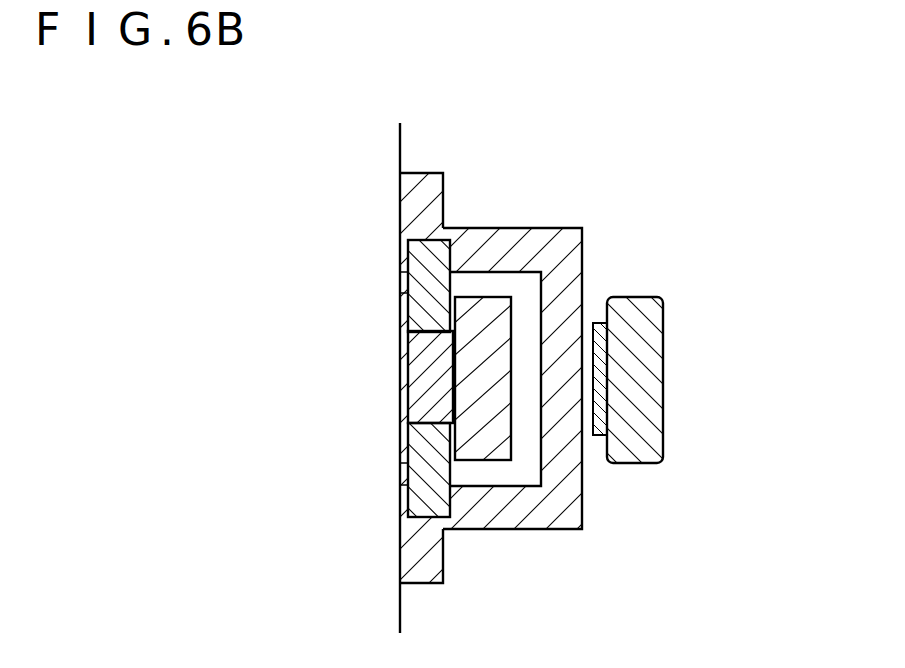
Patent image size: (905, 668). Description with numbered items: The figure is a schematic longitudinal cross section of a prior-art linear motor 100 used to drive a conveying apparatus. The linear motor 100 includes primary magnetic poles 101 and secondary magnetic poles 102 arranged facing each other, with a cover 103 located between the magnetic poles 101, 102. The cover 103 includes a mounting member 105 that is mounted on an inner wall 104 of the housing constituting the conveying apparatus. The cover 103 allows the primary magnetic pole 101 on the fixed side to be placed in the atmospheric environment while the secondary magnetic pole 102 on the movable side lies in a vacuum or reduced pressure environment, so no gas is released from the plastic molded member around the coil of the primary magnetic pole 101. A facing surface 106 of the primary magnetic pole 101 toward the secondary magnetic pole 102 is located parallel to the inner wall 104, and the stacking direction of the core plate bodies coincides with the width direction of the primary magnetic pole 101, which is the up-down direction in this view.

The linear motor 100 is at (352, 277).
The primary magnetic pole 101 is at (485, 310).
The secondary magnetic pole 102 is at (655, 328).
The cover 103 is at (583, 257).
The inner wall 104 is at (400, 614).
The mounting member 105 is at (439, 557).
The facing surface 106 is at (515, 445).